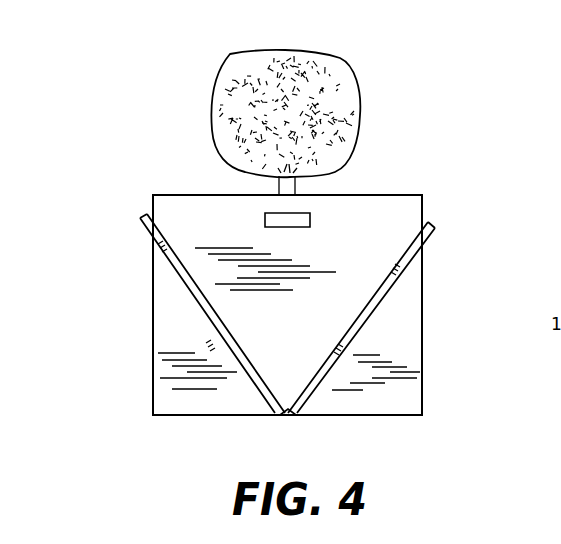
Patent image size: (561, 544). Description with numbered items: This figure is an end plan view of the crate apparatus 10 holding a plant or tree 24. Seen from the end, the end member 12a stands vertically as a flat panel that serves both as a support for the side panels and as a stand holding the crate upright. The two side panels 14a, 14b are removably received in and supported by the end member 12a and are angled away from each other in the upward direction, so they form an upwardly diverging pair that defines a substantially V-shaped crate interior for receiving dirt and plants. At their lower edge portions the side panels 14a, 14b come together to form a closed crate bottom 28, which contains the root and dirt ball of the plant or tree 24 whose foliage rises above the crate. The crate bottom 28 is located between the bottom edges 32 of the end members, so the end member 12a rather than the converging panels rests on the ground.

The crate apparatus 10 is at (145, 105).
The end member 12a is at (408, 388).
The side panel 14a is at (187, 293).
The side panel 14b is at (396, 288).
The plant or tree 24 is at (333, 72).
The crate bottom 28 is at (288, 417).
The bottom edge 32 is at (360, 415).